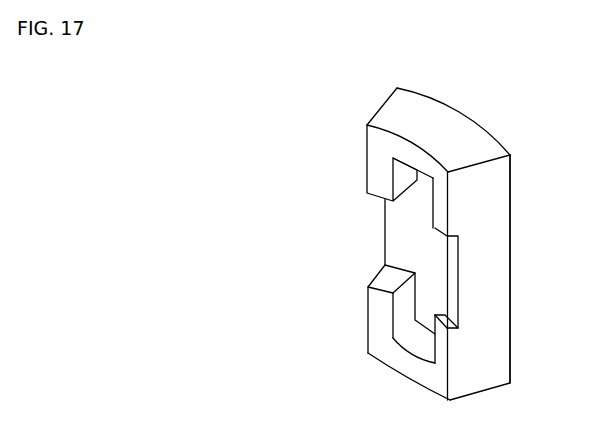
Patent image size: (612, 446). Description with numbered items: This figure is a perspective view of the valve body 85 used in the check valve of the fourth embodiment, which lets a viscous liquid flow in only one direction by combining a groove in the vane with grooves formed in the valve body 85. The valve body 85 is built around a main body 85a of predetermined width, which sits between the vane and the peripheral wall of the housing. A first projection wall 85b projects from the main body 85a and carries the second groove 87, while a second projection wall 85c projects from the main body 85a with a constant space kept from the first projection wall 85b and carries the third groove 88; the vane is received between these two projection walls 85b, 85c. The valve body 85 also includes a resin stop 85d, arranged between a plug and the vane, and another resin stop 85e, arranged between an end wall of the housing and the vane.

The valve body 85 is at (330, 82).
The main body 85a is at (462, 113).
The first projection wall 85b is at (367, 177).
The second projection wall 85c is at (477, 208).
The stop 85d is at (413, 158).
The stop 85e is at (408, 358).
The second groove 87 is at (397, 230).
The third groove 88 is at (450, 282).